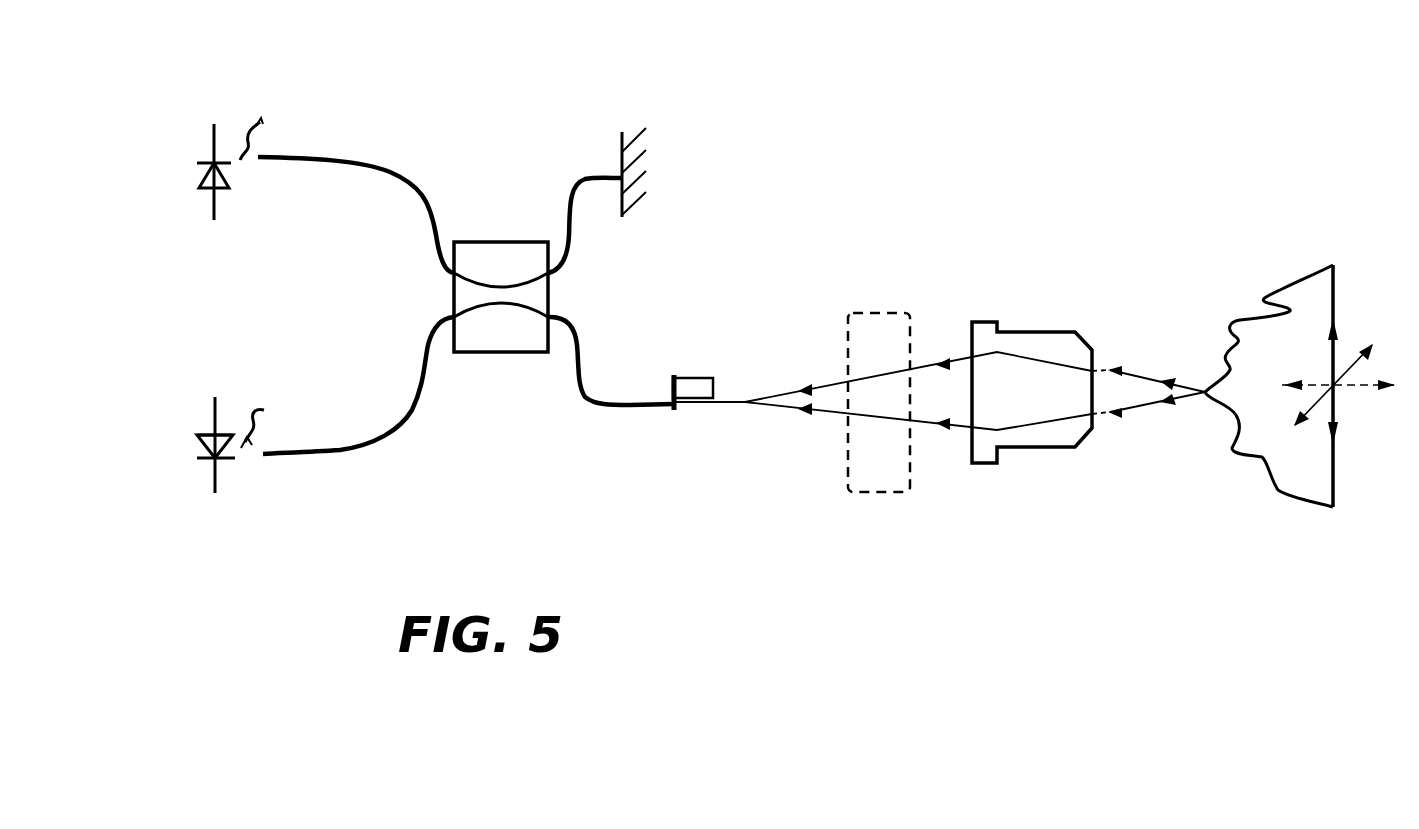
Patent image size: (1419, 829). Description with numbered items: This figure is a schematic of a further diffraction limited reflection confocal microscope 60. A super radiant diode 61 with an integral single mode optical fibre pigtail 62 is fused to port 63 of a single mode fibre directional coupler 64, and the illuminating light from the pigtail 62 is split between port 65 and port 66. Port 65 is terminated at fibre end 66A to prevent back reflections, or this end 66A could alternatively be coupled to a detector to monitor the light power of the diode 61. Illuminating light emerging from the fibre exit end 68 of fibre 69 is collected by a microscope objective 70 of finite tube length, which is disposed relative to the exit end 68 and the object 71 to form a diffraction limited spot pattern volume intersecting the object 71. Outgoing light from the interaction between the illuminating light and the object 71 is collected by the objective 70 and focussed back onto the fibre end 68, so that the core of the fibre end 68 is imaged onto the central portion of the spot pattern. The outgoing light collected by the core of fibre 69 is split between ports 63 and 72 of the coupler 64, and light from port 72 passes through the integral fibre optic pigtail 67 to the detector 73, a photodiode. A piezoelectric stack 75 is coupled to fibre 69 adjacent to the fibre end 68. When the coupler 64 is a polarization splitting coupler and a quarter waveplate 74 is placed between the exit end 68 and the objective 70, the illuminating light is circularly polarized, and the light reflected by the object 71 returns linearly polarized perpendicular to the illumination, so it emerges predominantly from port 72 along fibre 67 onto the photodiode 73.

The diffraction limited reflection confocal microscope 60 is at (952, 138).
The super radiant diode 61 is at (197, 185).
The integral single mode optical fibre pigtail 62 is at (378, 165).
The port 63 is at (450, 275).
The single mode fibre directional coupler 64 is at (487, 257).
The port 65 is at (553, 280).
The port 66 is at (553, 312).
The fibre end 66A is at (618, 172).
The integral fibre optic pigtail 67 is at (393, 438).
The fibre exit end 68 is at (741, 407).
The fibre 69 is at (620, 406).
The microscope objective 70 is at (1038, 437).
The object 71 is at (1265, 440).
The port 72 is at (452, 313).
The detector 73 is at (196, 440).
The quarter waveplate 74 is at (879, 482).
The piezoelectric stack 75 is at (688, 378).